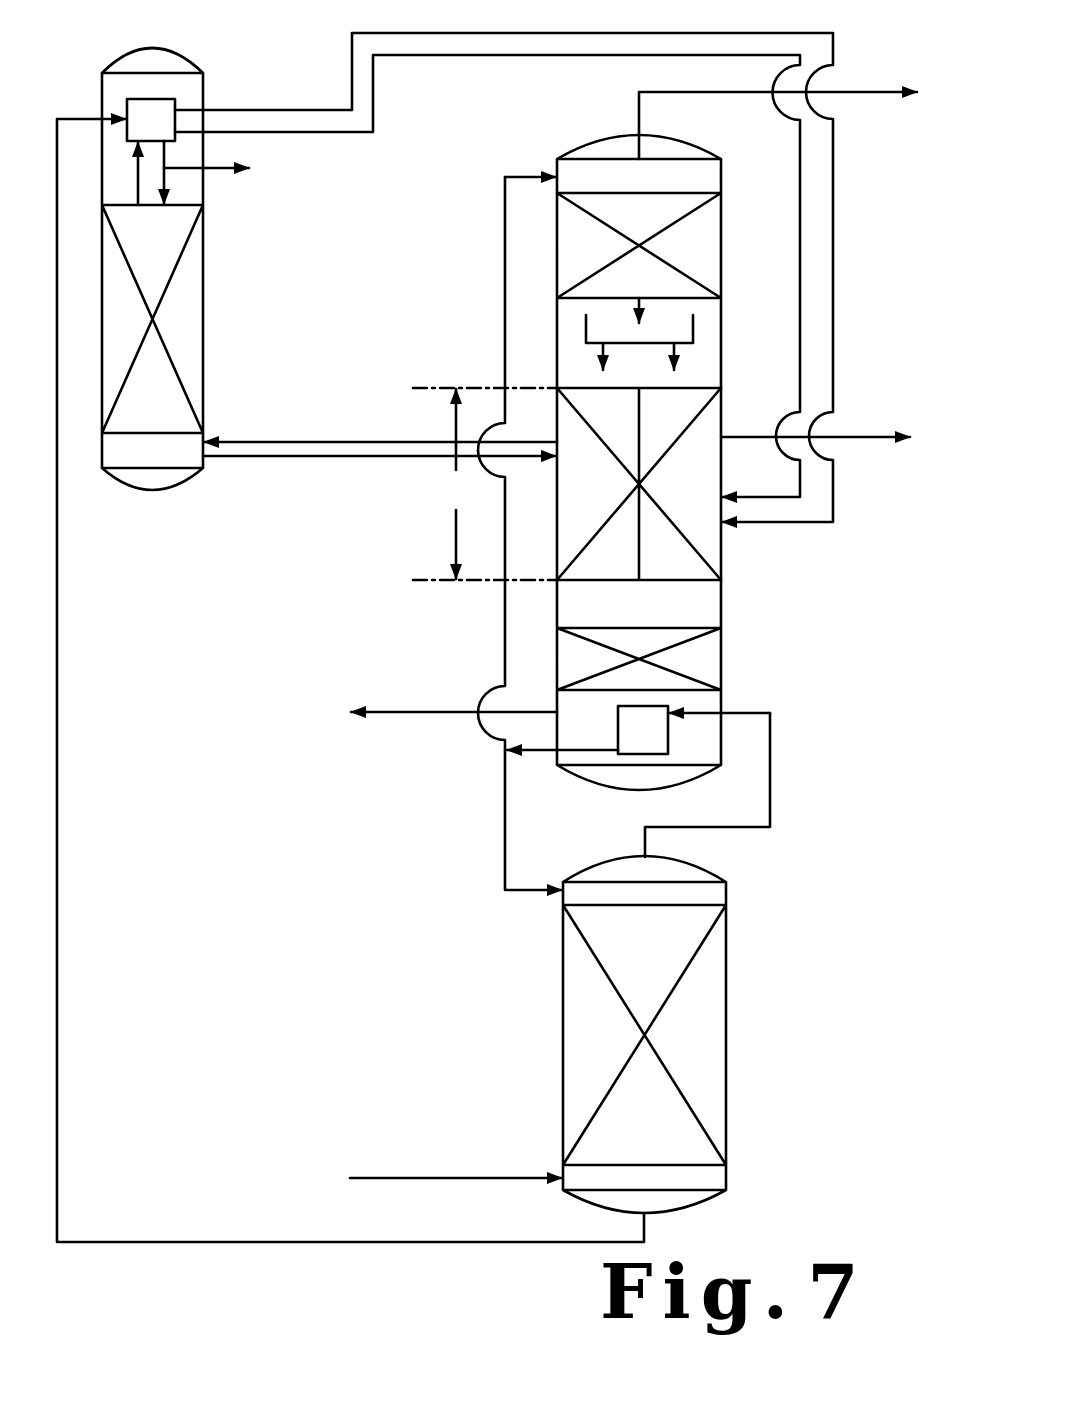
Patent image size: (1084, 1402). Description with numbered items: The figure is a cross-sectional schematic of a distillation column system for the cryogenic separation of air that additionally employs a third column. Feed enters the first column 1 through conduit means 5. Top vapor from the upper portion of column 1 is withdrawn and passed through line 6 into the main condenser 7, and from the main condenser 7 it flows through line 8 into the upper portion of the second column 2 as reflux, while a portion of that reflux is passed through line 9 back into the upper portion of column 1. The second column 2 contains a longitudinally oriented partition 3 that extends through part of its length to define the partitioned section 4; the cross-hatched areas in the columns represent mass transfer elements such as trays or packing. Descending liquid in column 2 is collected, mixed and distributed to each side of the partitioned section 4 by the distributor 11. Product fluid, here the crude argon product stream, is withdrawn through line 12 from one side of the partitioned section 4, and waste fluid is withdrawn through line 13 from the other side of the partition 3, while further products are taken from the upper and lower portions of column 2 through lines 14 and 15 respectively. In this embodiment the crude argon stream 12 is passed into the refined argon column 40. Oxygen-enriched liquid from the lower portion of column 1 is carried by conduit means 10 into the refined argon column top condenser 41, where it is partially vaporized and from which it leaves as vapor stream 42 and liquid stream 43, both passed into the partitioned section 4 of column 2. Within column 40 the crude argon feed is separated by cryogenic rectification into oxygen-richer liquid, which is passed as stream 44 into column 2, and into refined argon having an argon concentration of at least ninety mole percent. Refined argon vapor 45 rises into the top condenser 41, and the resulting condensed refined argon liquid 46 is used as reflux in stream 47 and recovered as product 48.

The first column 1 is at (563, 1003).
The second column 2 is at (721, 265).
The partition 3 is at (690, 430).
The partitioned section 4 is at (558, 502).
The conduit means 5 is at (475, 1178).
The line 6 is at (772, 750).
The main condenser 7 is at (632, 735).
The line 8 is at (505, 628).
The line 9 is at (507, 868).
The conduit means 10 is at (215, 1242).
The distributor 11 is at (665, 342).
The line 12 is at (405, 457).
The line 13 is at (862, 437).
The line 14 is at (872, 95).
The line 15 is at (452, 712).
The refined argon column 40 is at (203, 300).
The refined argon column top condenser 41 is at (178, 110).
The vapor stream 42 is at (350, 92).
The liquid stream 43 is at (490, 55).
The stream 44 is at (255, 457).
The refined argon vapor 45 is at (130, 163).
The condensed refined argon liquid 46 is at (165, 157).
The stream 47 is at (167, 177).
The product 48 is at (222, 172).